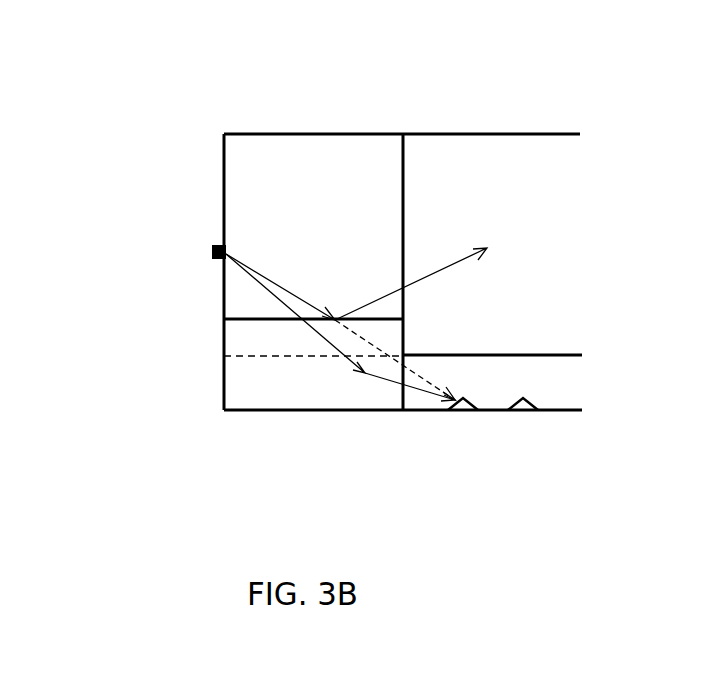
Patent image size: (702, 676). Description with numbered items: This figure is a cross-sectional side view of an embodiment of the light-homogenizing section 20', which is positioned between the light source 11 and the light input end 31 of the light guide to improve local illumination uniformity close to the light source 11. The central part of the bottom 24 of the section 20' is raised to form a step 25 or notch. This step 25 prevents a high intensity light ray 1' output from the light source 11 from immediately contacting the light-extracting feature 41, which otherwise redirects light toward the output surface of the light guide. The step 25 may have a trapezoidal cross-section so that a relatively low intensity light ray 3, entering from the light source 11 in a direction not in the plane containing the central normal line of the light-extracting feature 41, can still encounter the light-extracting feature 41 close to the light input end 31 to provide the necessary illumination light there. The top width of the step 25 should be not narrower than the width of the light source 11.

The light-homogenizing section 20' is at (380, 219).
The light input end 31 is at (403, 182).
The high intensity light ray 1' is at (312, 258).
The light source 11 is at (212, 247).
The low intensity light ray 3 is at (252, 284).
The step 25 is at (252, 322).
The bottom 24 is at (288, 412).
The light-extracting feature 41 is at (470, 402).